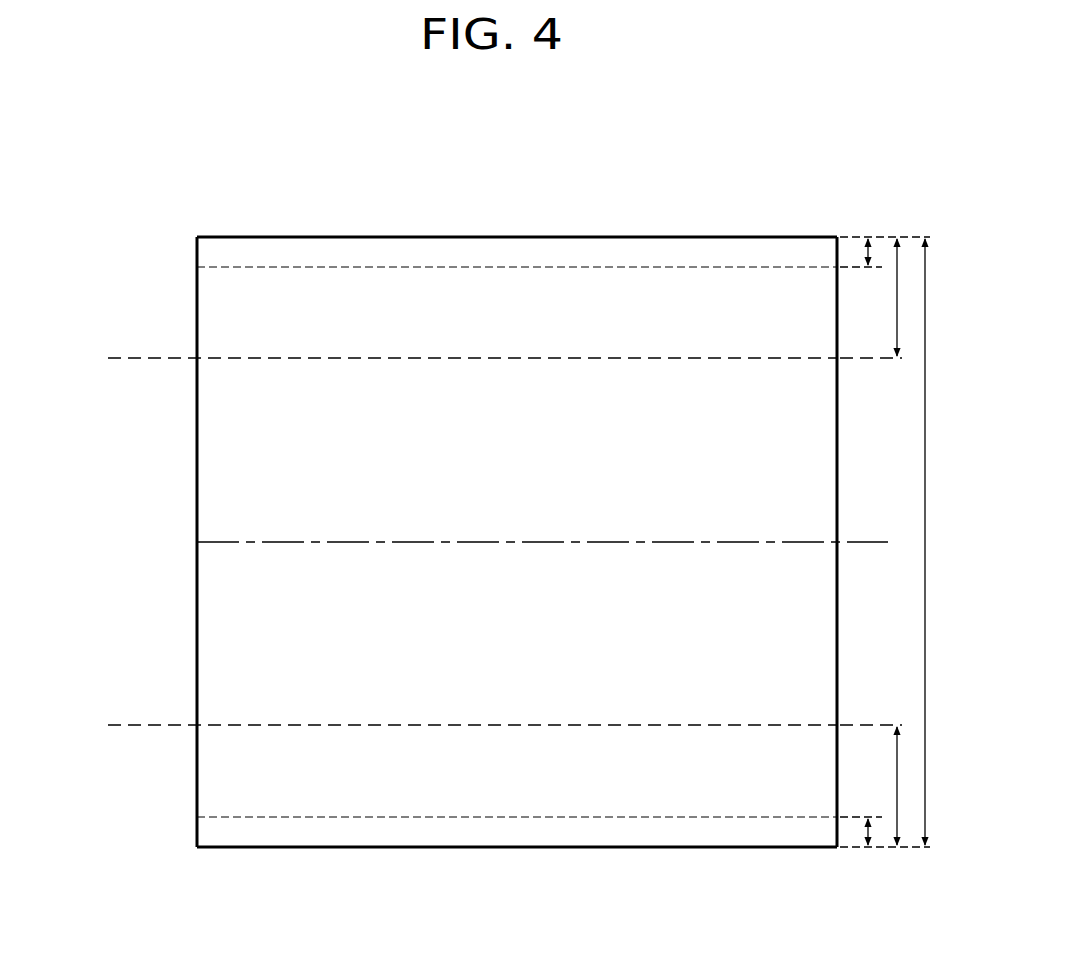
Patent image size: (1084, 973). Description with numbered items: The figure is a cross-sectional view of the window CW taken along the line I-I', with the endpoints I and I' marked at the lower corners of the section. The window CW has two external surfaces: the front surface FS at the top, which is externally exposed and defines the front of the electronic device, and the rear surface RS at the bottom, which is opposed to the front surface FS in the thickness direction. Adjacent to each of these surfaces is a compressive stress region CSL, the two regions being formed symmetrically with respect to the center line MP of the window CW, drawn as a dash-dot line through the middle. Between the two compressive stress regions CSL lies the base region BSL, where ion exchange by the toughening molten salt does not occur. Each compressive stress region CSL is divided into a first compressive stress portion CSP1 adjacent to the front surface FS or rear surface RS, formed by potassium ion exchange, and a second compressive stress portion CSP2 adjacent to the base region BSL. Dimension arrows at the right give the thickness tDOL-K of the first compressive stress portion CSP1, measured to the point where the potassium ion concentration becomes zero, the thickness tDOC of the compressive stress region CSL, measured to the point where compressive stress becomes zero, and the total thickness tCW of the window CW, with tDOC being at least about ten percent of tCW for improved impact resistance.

The window CW is at (774, 140).
The front surface FS is at (293, 234).
The rear surface RS is at (296, 852).
The compressive stress region CSL is at (103, 238).
The first compressive stress portion CSP1 is at (208, 248).
The second compressive stress portion CSP2 is at (208, 314).
The base region BSL is at (108, 358).
The center line MP is at (197, 542).
The thickness of the first compressive stress portion tDOL-K is at (850, 902).
The thickness of the compressive stress region tDOC is at (933, 902).
The total thickness of the window tCW is at (944, 542).
The section line endpoint I is at (195, 869).
The section line endpoint I' is at (835, 869).